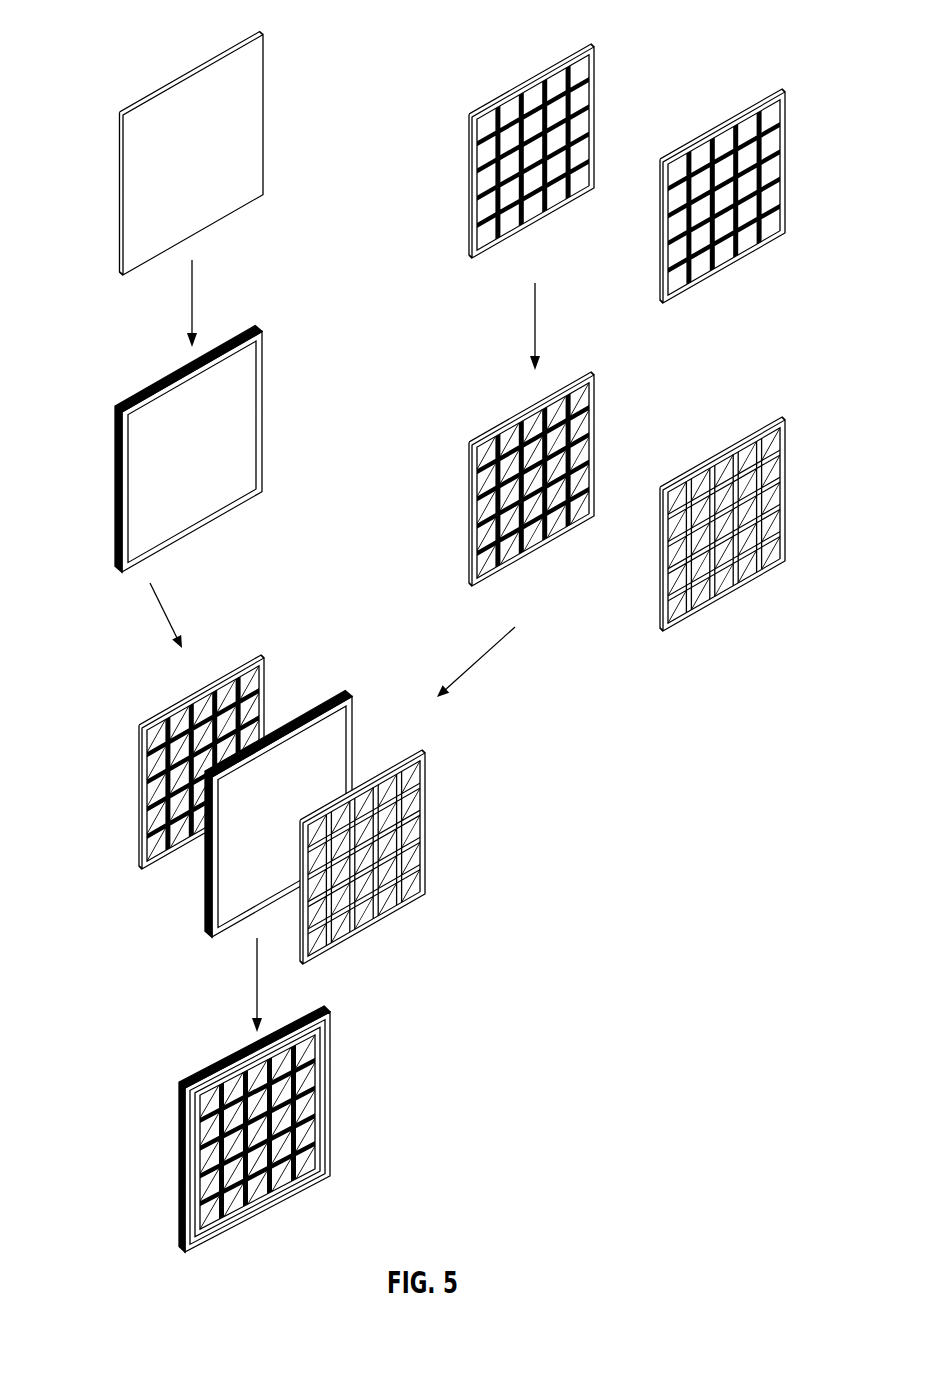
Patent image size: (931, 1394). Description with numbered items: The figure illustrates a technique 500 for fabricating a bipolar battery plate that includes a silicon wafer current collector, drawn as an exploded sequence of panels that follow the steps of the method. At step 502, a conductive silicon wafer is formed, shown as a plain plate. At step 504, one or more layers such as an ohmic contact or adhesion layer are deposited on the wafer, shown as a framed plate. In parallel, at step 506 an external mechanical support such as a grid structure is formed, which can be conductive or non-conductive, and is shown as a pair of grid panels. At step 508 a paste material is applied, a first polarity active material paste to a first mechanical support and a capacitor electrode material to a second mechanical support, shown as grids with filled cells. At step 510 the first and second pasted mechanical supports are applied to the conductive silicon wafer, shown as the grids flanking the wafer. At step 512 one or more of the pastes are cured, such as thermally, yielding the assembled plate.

The technique 500 is at (152, 40).
The conductive silicon wafer forming step 502 is at (122, 210).
The layer deposition step 504 is at (121, 490).
The external mechanical support forming step 506 is at (447, 113).
The paste application step 508 is at (447, 430).
The pasted support application step 510 is at (470, 690).
The paste curing step 512 is at (184, 1170).